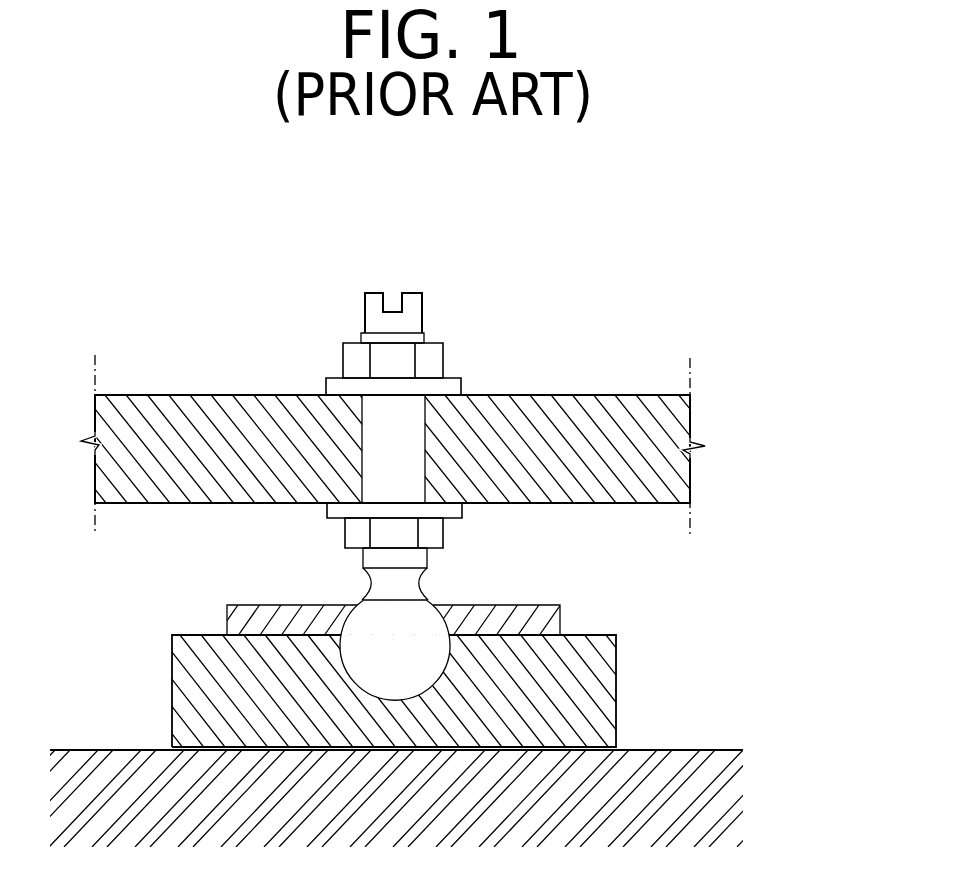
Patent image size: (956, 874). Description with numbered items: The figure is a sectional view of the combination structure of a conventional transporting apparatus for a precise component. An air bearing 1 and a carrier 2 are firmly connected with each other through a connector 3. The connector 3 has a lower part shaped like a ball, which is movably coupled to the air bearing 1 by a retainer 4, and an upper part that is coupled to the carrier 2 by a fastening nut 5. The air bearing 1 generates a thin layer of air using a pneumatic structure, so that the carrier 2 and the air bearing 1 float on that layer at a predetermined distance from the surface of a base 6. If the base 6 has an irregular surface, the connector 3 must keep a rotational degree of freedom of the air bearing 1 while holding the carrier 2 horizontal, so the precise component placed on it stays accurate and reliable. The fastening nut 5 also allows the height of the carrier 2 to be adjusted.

The air bearing 1 is at (617, 695).
The carrier 2 is at (673, 420).
The connector 3 is at (427, 557).
The retainer 4 is at (562, 622).
The fastening nut 5 is at (445, 358).
The base 6 is at (733, 790).